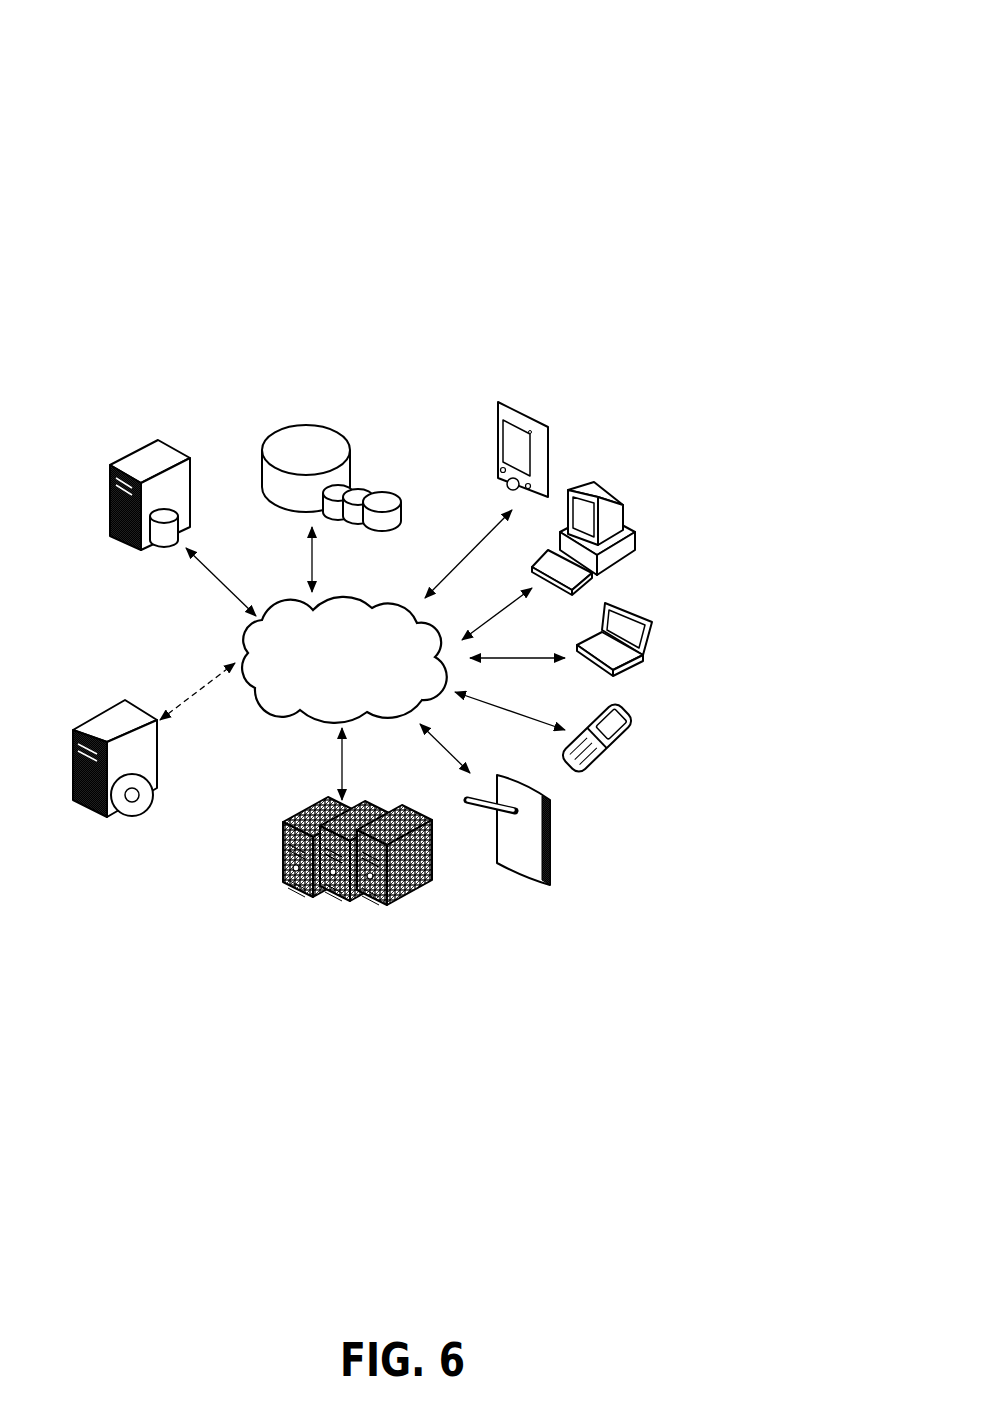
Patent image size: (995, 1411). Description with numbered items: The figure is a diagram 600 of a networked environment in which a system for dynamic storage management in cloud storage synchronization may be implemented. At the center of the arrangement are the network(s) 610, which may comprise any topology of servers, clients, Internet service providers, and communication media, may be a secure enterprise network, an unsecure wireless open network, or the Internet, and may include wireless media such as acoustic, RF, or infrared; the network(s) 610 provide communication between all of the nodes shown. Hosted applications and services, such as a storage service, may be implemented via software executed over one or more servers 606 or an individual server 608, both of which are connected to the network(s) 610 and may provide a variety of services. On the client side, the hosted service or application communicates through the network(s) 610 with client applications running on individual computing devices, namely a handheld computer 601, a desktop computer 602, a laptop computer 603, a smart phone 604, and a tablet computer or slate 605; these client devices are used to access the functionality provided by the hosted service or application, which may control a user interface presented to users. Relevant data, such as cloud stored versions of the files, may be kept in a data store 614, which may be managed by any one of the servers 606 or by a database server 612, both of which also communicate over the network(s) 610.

The diagram 600 is at (682, 24).
The handheld computer 601 is at (552, 405).
The desktop computer 602 is at (634, 498).
The laptop computer 603 is at (653, 598).
The smart phone 604 is at (627, 710).
The tablet computer 605 is at (564, 815).
The servers 606 is at (309, 798).
The individual server 608 is at (95, 710).
The network(s) 610 is at (345, 588).
The database server 612 is at (161, 566).
The data store 614 is at (322, 403).